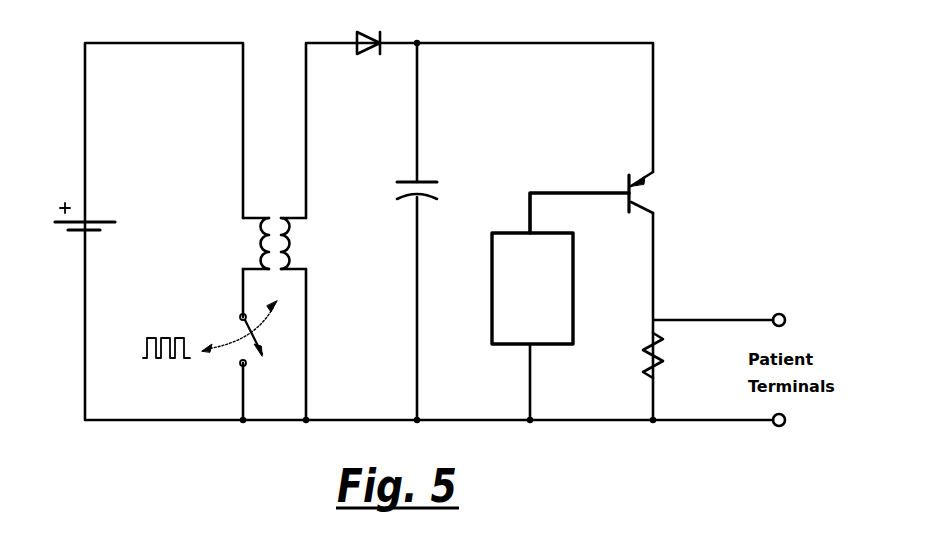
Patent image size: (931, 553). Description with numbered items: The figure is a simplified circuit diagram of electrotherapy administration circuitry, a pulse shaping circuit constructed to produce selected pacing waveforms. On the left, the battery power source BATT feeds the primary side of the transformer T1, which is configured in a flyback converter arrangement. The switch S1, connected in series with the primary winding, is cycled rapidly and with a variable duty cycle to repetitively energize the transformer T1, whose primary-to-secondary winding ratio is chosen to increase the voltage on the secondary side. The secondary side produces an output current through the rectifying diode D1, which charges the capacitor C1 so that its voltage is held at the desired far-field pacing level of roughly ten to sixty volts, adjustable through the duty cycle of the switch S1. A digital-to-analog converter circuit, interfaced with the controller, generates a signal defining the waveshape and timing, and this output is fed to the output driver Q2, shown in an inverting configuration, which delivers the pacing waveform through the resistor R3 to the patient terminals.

The battery power source BATT is at (71, 233).
The transformer T1 is at (274, 227).
The switch S1 is at (210, 333).
The rectifying diode D1 is at (351, 36).
The capacitor C1 is at (400, 178).
The output driver Q2 is at (591, 195).
The resistor R3 is at (636, 355).